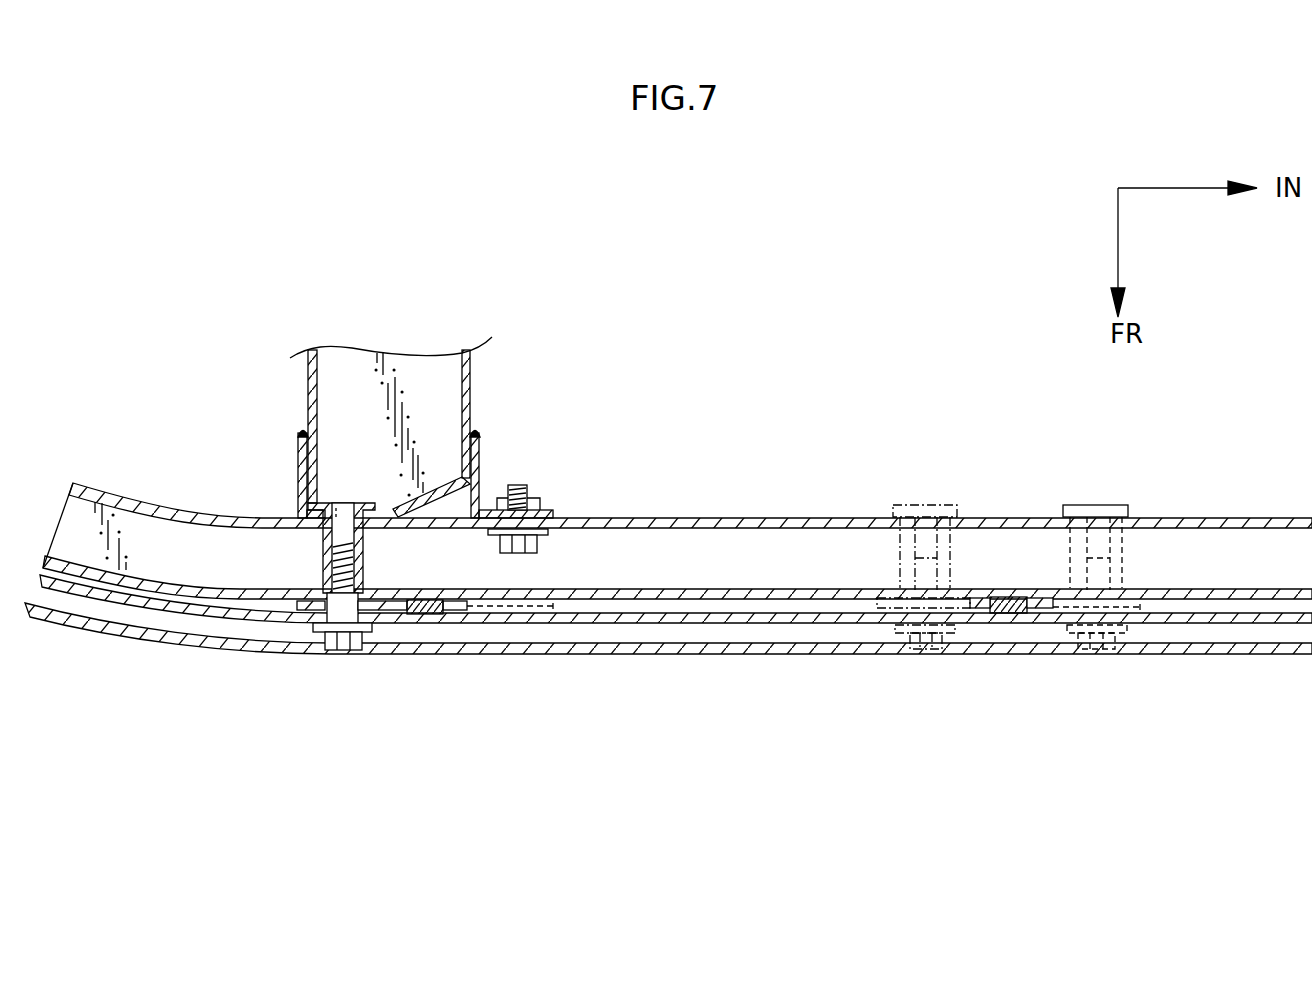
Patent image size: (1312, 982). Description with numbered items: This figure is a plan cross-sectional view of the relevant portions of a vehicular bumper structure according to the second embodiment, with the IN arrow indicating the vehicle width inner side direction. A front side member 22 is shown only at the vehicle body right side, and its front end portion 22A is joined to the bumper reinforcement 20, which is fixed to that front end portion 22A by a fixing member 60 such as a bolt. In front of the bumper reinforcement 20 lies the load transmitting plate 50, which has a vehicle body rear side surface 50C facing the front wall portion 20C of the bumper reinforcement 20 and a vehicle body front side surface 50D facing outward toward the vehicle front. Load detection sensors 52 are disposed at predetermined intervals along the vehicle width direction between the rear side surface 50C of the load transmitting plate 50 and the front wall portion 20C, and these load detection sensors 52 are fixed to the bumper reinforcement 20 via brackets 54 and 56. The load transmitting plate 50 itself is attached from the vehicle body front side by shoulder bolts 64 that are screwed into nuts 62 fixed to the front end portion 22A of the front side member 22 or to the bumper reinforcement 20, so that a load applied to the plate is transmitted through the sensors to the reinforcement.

The bumper reinforcement 20 is at (677, 562).
The front wall portion 20C is at (820, 600).
The front side member 22 is at (473, 383).
The front end portion 22A is at (435, 490).
The load transmitting plate 50 is at (668, 598).
The vehicle body rear side surface 50C is at (748, 612).
The vehicle body front side surface 50D is at (657, 656).
The load detection sensor 52 is at (418, 615).
The bracket 54 is at (461, 623).
The bracket 56 is at (1037, 610).
The fixing member 60 is at (530, 553).
The nut 62 is at (322, 567).
The shoulder bolt 64 is at (343, 645).